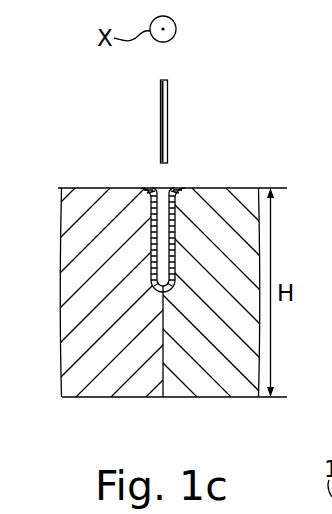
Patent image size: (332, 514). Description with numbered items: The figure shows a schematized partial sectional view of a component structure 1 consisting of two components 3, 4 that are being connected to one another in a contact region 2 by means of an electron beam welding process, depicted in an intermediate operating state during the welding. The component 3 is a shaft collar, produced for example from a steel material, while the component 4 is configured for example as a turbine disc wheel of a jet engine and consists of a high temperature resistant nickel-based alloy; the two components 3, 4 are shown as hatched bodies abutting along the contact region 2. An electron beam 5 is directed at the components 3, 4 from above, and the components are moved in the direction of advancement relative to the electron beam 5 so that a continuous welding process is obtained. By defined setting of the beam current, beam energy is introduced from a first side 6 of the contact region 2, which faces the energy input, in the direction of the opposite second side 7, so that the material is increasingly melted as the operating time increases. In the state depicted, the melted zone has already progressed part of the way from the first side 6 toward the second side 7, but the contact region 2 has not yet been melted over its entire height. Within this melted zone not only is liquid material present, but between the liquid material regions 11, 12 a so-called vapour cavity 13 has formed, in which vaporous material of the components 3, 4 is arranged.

The component structure 1 is at (92, 124).
The contact region 2 is at (159, 312).
The component 3 is at (77, 206).
The component 4 is at (247, 207).
The electron beam 5 is at (168, 90).
The first side 6 is at (160, 186).
The second side 7 is at (164, 399).
The liquid material region 11 is at (152, 187).
The liquid material region 12 is at (175, 187).
The vapour cavity 13 is at (167, 188).